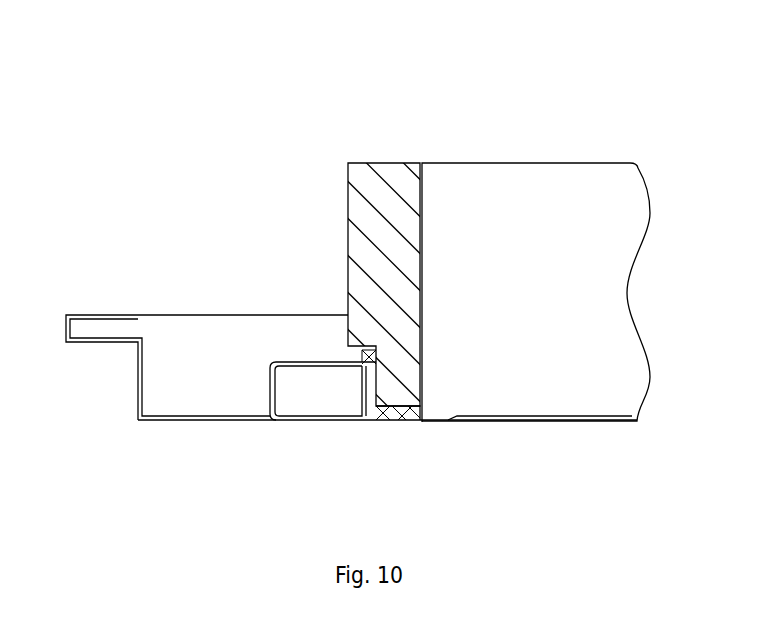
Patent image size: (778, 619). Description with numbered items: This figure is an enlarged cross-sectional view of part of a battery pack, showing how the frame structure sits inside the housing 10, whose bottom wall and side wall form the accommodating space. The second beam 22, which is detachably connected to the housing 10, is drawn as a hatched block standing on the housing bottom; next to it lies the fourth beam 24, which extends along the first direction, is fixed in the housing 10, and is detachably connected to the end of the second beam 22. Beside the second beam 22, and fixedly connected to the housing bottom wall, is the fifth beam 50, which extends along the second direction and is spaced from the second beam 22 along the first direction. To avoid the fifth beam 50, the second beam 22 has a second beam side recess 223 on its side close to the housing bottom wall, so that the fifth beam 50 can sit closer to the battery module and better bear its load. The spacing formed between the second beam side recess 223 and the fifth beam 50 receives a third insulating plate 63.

The housing 10 is at (113, 317).
The second beam 22 is at (383, 177).
The fourth beam 24 is at (520, 177).
The fifth beam 50 is at (302, 362).
The third insulating plate 63 is at (397, 412).
The second beam side recess 223 is at (372, 353).